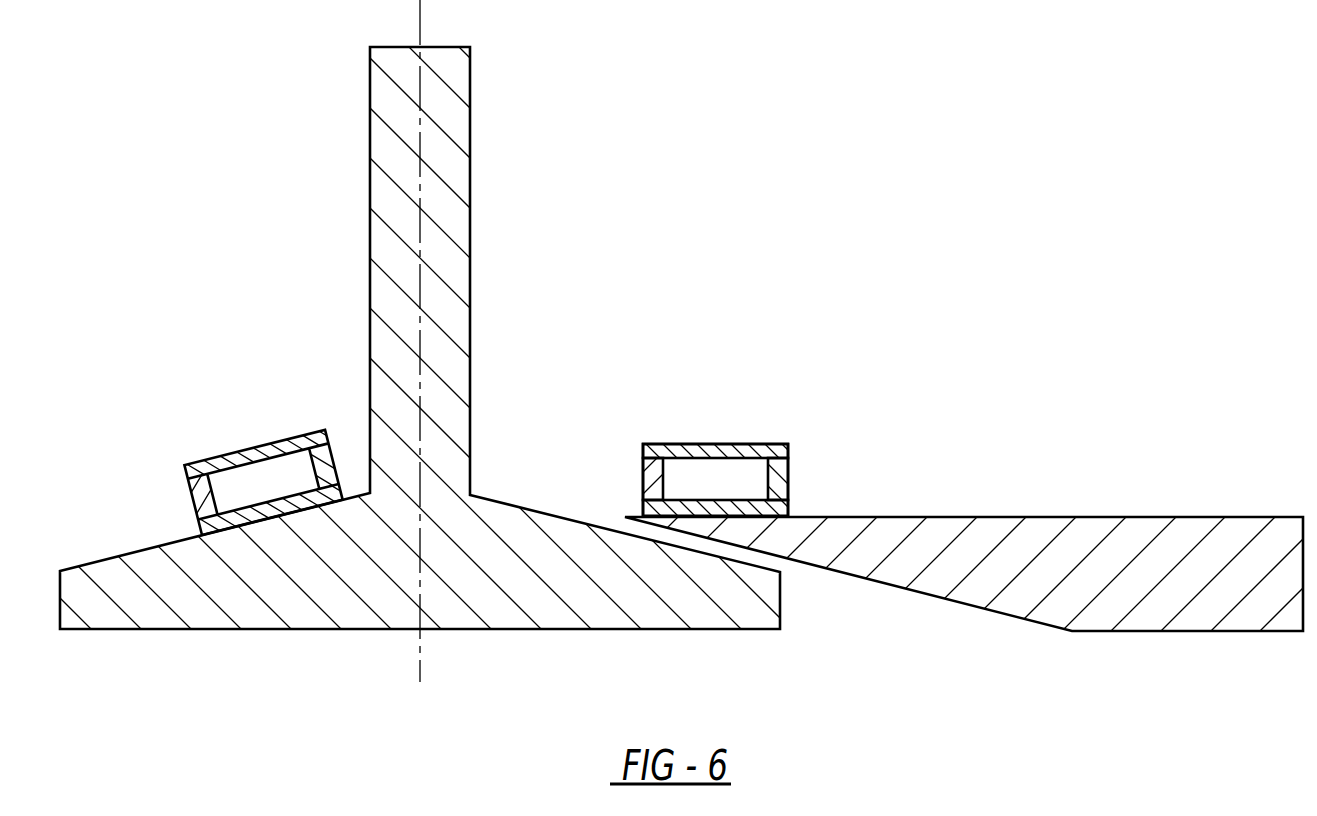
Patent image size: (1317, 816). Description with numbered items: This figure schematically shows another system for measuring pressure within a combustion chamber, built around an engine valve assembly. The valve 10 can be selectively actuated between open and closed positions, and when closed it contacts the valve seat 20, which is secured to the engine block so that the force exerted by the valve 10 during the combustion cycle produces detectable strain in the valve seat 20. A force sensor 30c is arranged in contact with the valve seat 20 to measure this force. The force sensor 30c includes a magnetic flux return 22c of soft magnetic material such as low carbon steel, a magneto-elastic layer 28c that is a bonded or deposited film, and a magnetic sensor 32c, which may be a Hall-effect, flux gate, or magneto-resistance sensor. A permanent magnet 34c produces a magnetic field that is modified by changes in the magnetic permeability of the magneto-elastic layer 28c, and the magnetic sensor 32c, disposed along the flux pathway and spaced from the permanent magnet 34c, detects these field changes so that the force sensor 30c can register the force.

The valve 10 is at (677, 597).
The valve seat 20 is at (1133, 603).
The force sensor 30c is at (457, 402).
The magnetic flux return 22c is at (719, 403).
The magneto-elastic layer 28c is at (743, 438).
The magnetic sensor 32c is at (668, 406).
The permanent magnet 34c is at (821, 472).